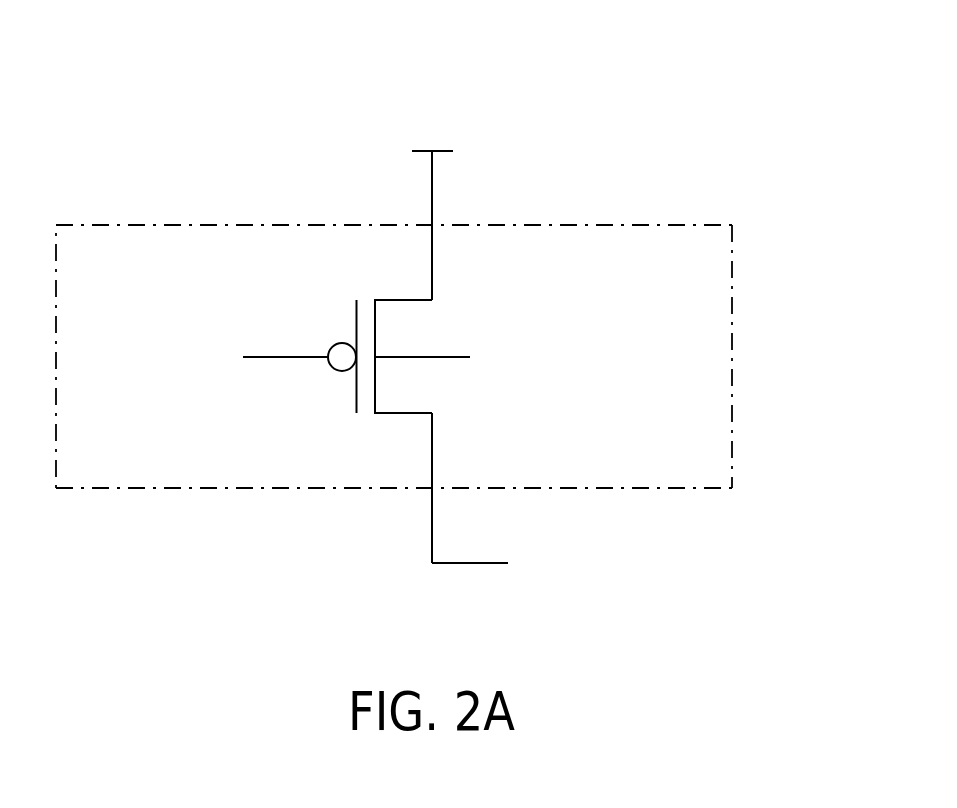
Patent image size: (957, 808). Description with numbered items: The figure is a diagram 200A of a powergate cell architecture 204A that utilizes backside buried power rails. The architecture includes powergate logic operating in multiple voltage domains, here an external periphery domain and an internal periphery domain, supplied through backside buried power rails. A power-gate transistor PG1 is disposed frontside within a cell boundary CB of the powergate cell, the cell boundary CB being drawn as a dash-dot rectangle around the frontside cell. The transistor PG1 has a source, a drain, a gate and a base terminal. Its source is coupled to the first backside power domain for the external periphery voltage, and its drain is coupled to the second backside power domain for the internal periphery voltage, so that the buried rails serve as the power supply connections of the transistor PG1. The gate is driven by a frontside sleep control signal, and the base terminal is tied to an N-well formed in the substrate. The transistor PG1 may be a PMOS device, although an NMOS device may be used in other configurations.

The diagram 200A is at (80, 30).
The powergate cell architecture 204A is at (618, 57).
The cell boundary CB is at (563, 225).
The power-gate transistor PG1 is at (351, 338).